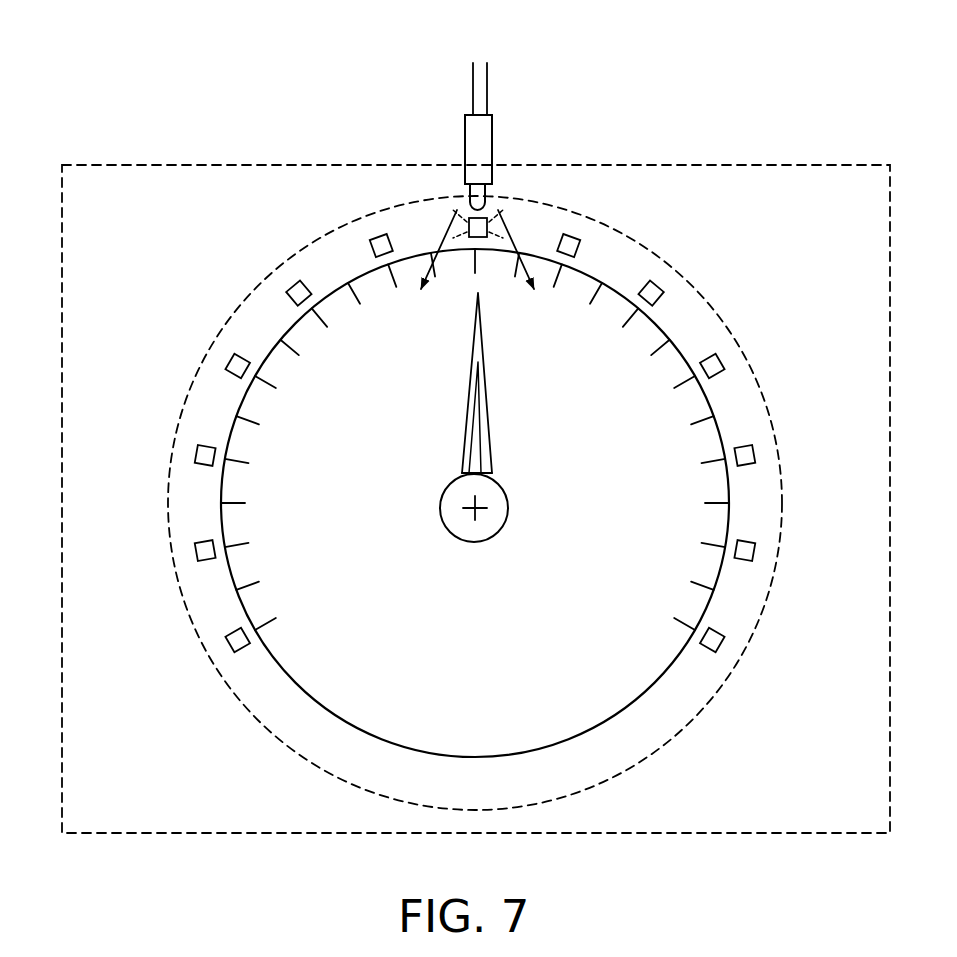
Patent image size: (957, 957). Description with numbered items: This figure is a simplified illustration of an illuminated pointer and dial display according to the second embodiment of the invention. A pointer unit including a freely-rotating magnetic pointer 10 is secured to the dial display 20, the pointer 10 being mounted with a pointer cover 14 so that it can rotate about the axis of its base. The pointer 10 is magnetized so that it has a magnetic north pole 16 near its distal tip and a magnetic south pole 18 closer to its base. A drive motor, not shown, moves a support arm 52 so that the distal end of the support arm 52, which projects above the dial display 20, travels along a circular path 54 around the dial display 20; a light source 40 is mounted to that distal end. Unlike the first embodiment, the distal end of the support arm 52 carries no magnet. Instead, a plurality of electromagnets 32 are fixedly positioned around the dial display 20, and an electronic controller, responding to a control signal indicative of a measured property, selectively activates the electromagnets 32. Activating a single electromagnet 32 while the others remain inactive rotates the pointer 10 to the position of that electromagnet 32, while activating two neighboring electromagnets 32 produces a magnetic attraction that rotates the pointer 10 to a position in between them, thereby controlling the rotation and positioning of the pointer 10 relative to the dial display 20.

The pointer 10 is at (456, 413).
The pointer cover 14 is at (447, 536).
The magnetic north pole 16 is at (488, 317).
The magnetic south pole 18 is at (495, 475).
The dial display 20 is at (372, 650).
The electromagnets 32 is at (223, 358).
The light source 40 is at (495, 203).
The support arm 52 is at (463, 90).
The circular path 54 is at (770, 378).